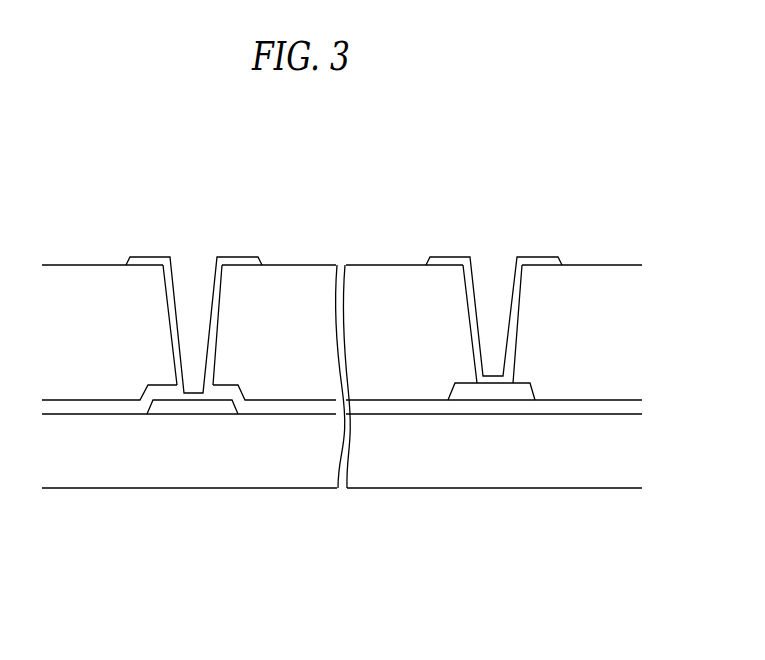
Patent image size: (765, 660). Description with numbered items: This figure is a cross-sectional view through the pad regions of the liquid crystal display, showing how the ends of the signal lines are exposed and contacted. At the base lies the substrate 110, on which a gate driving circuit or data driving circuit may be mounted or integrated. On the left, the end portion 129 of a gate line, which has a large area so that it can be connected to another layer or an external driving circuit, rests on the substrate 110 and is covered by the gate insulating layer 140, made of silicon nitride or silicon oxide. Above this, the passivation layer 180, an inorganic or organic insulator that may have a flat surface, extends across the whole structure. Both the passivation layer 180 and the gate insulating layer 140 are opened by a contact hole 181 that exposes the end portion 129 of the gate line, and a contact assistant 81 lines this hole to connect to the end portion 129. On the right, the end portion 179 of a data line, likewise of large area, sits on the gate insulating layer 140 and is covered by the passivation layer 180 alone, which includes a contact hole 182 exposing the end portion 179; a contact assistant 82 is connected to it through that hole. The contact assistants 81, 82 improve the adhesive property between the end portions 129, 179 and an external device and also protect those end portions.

The substrate 110 is at (593, 470).
The gate insulating layer 140 is at (98, 407).
The end portion of gate line 129 is at (192, 407).
The end portion of data line 179 is at (492, 390).
The passivation layer 180 is at (398, 372).
The contact hole 181 is at (170, 310).
The contact hole 182 is at (470, 310).
The contact assistant 81 is at (238, 260).
The contact assistant 82 is at (538, 260).